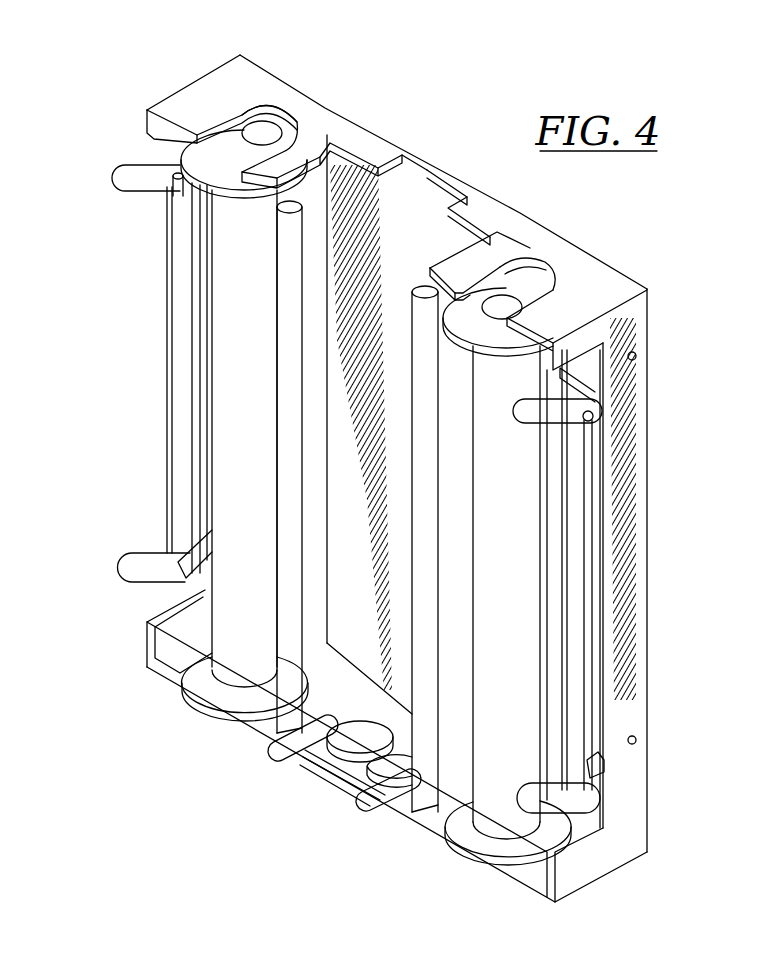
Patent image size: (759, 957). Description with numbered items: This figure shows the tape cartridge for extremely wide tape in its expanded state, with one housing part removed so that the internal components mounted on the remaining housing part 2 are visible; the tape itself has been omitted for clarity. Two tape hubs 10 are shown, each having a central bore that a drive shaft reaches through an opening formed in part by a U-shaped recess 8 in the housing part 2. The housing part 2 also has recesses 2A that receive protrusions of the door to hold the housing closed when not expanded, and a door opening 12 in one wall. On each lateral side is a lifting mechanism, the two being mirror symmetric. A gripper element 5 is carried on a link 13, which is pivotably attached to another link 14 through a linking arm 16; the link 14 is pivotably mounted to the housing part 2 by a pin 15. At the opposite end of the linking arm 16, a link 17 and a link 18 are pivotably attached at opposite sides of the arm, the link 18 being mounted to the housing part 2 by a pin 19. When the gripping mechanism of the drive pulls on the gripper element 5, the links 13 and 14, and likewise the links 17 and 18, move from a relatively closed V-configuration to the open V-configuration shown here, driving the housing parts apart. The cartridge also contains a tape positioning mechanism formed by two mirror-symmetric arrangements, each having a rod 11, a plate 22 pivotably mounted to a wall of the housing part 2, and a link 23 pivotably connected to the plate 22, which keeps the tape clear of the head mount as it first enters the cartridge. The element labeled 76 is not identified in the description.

The housing part 2 is at (200, 97).
The recess 2A is at (250, 117).
The gripper element 5 is at (588, 420).
The U-shaped recess 8 is at (305, 100).
The tape hub 10 is at (258, 130).
The rod 11 is at (283, 207).
The door opening 12 is at (447, 202).
The link 13 is at (132, 182).
The link 14 is at (183, 192).
The pin 15 is at (633, 352).
The linking arm 16 is at (573, 587).
The link 17 is at (142, 567).
The link 18 is at (184, 570).
The pin 19 is at (633, 736).
The plate 22 is at (403, 767).
The link 23 is at (263, 742).
The post 76 is at (183, 367).